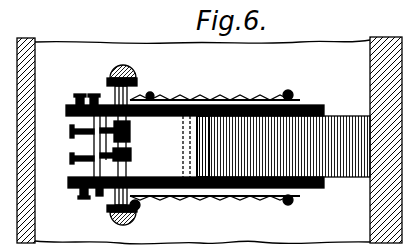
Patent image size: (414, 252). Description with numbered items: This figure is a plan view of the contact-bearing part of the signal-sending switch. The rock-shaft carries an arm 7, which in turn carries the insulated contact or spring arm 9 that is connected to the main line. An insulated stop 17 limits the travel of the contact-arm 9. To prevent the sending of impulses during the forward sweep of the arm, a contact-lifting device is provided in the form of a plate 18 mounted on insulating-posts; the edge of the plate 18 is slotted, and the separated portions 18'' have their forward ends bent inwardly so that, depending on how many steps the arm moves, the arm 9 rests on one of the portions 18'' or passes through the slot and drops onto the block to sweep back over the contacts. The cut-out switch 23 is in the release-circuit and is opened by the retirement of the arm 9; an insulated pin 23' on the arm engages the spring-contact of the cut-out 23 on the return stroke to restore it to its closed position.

The arm 7 is at (134, 76).
The contact or spring arm 9 is at (109, 88).
The insulated stop 17 is at (73, 98).
The plate 18 is at (276, 127).
The slotted portions of the plate 18'' is at (215, 136).
The cut-out switch 23 is at (70, 147).
The insulated pin 23' is at (132, 145).